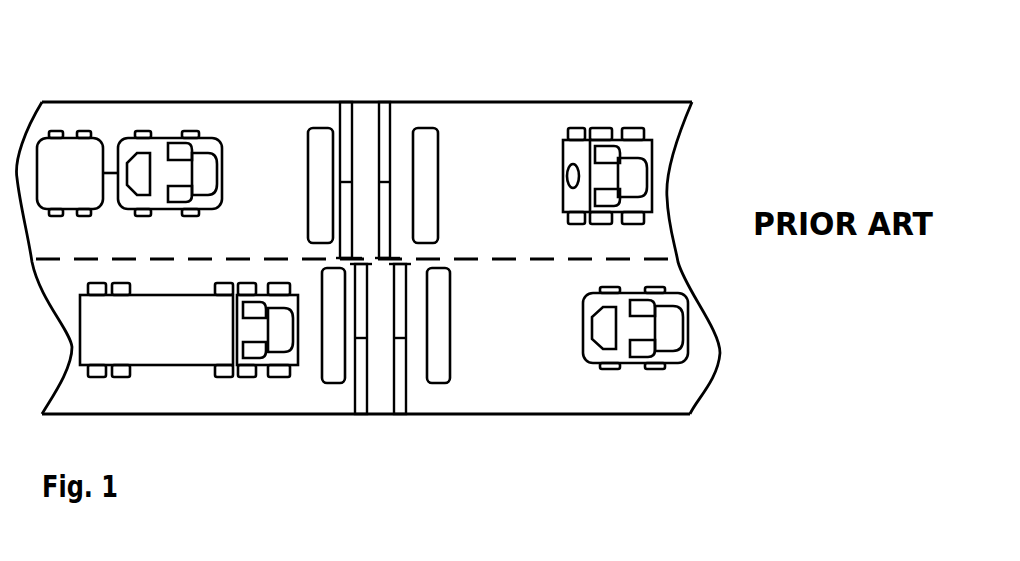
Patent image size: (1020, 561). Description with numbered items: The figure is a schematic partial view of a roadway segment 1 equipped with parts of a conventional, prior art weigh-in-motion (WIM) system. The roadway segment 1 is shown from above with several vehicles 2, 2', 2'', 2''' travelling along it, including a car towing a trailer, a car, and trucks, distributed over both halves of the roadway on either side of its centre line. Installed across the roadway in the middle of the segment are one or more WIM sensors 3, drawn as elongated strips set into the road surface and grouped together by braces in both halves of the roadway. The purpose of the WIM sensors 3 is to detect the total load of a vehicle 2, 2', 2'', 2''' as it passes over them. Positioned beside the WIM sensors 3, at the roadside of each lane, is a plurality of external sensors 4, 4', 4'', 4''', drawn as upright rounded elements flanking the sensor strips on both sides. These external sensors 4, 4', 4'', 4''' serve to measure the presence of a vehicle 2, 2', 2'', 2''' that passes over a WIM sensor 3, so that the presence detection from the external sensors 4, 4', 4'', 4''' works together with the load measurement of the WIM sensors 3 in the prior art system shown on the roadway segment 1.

The roadway segment 1 is at (564, 440).
The vehicle 2 is at (156, 131).
The vehicle 2' is at (612, 130).
The vehicle 2'' is at (190, 380).
The vehicle 2''' is at (635, 372).
The WIM sensor 3 is at (390, 227).
The external sensor 4 is at (320, 148).
The external sensor 4' is at (453, 148).
The external sensor 4'' is at (327, 375).
The external sensor 4''' is at (477, 373).